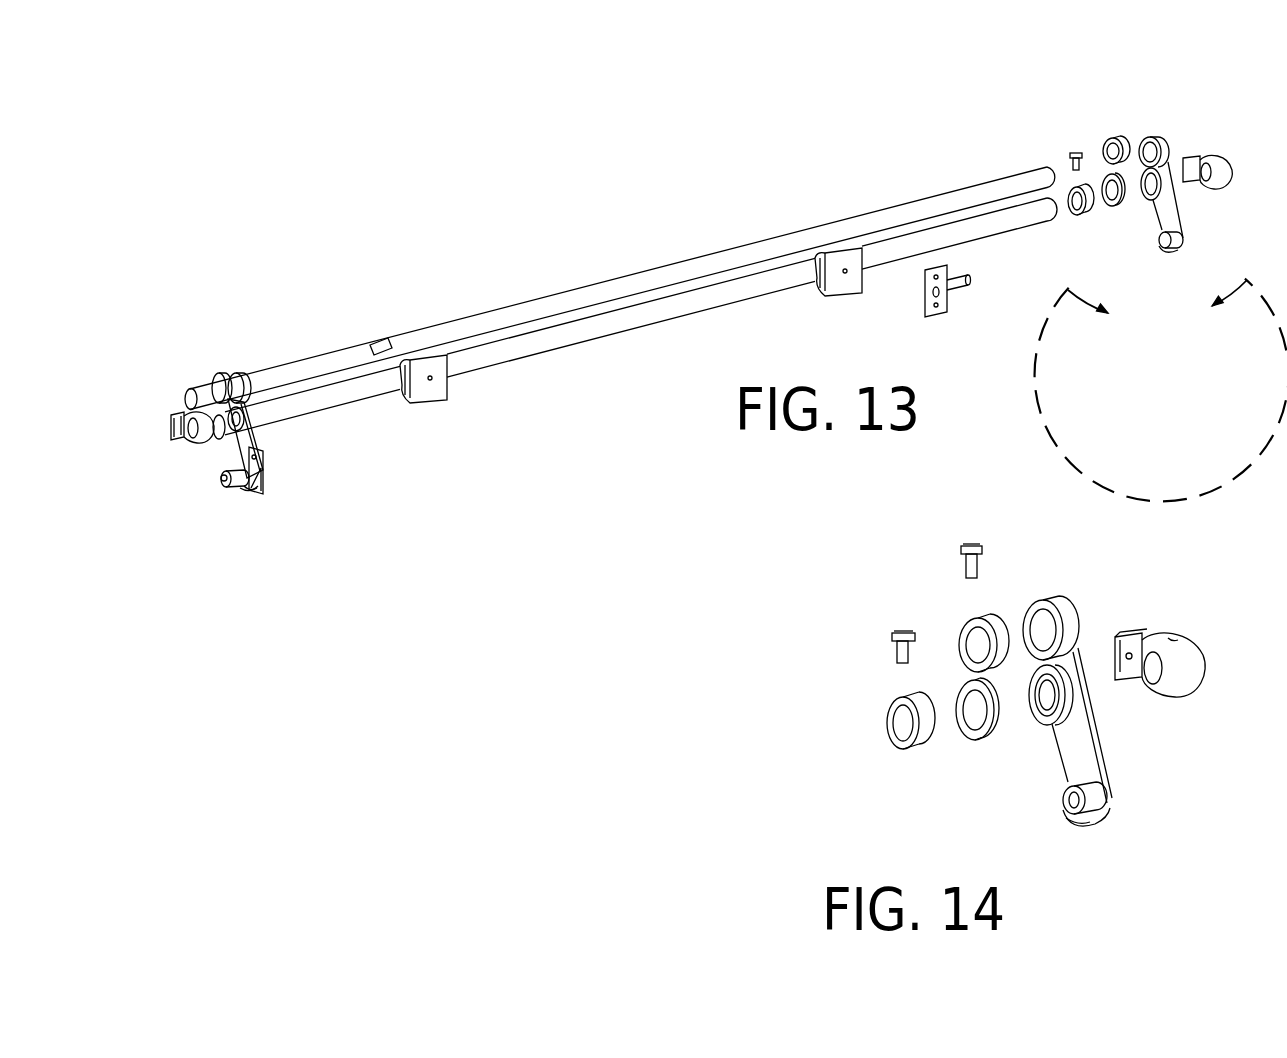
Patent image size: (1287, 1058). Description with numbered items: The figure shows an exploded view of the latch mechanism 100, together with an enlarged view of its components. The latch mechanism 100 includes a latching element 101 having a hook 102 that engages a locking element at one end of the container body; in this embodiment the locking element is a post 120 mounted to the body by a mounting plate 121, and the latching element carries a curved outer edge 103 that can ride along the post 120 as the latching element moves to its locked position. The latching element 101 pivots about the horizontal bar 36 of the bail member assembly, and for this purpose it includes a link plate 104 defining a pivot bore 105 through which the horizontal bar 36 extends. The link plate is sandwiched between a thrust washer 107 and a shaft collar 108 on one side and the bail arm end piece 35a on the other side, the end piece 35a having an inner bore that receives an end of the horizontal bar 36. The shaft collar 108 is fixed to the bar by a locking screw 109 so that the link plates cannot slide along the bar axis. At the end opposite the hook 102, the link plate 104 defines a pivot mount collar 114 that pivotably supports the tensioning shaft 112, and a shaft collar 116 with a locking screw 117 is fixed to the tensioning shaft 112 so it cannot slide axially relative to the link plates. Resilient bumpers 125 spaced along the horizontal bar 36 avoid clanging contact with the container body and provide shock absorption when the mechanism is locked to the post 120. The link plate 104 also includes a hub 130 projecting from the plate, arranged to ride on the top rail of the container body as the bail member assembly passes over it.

In FIG. 13, the latch mechanism 100 is at (726, 186).
In FIG. 13, the tensioning shaft 112 is at (528, 330).
In FIG. 13, the horizontal bar 36 is at (366, 372).
In FIG. 13, the resilient bumpers 125 is at (431, 407).
In FIG. 13, the bail arm end piece 35a is at (190, 443).
In FIG. 14, the bail arm end piece 35a is at (1206, 681).
In FIG. 13, the latching element 101 is at (214, 453).
In FIG. 14, the latching element 101 is at (1090, 615).
In FIG. 13, the mounting plate 121 is at (264, 455).
In FIG. 13, the post 120 is at (223, 484).
In FIG. 13, the hook 102 is at (241, 488).
In FIG. 14, the hook 102 is at (1090, 820).
In FIG. 14, the locking screw 117 is at (968, 546).
In FIG. 14, the locking screw 109 is at (908, 622).
In FIG. 14, the shaft collar 116 is at (1003, 612).
In FIG. 14, the pivot mount collar 114 is at (1036, 604).
In FIG. 14, the pivot bore 105 is at (1038, 720).
In FIG. 14, the thrust washer 107 is at (994, 750).
In FIG. 14, the shaft collar 108 is at (912, 760).
In FIG. 14, the link plate 104 is at (1088, 745).
In FIG. 14, the hub 130 is at (1100, 795).
In FIG. 14, the curved outer edge 103 is at (1108, 815).